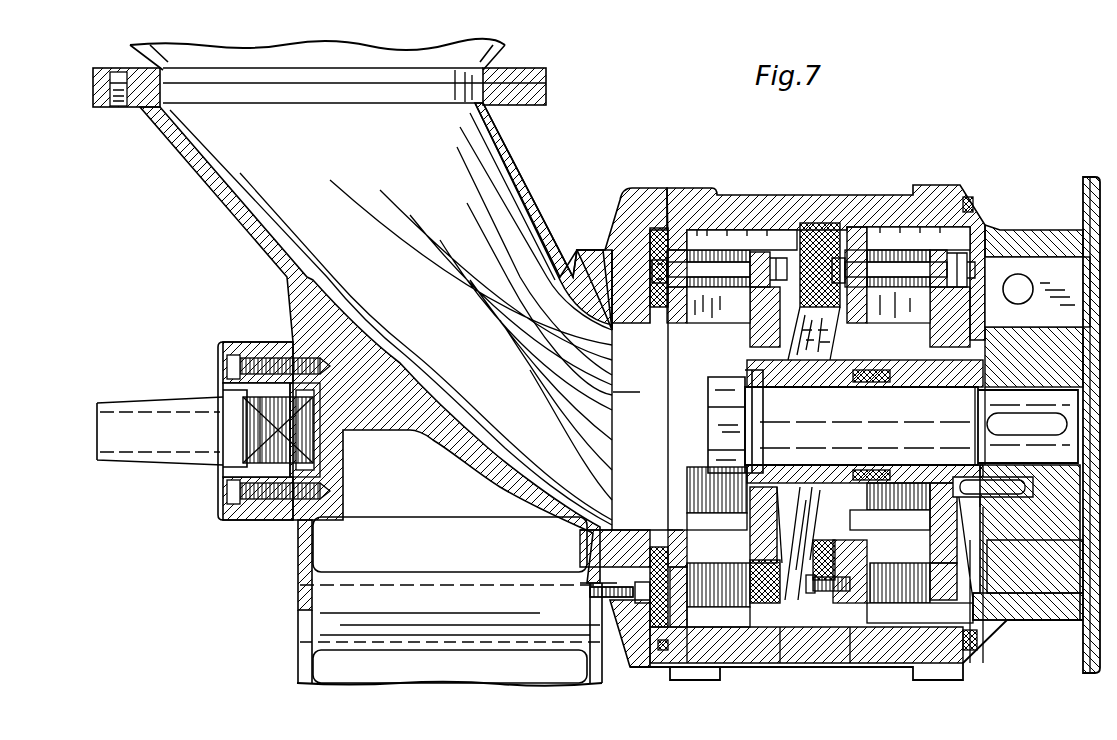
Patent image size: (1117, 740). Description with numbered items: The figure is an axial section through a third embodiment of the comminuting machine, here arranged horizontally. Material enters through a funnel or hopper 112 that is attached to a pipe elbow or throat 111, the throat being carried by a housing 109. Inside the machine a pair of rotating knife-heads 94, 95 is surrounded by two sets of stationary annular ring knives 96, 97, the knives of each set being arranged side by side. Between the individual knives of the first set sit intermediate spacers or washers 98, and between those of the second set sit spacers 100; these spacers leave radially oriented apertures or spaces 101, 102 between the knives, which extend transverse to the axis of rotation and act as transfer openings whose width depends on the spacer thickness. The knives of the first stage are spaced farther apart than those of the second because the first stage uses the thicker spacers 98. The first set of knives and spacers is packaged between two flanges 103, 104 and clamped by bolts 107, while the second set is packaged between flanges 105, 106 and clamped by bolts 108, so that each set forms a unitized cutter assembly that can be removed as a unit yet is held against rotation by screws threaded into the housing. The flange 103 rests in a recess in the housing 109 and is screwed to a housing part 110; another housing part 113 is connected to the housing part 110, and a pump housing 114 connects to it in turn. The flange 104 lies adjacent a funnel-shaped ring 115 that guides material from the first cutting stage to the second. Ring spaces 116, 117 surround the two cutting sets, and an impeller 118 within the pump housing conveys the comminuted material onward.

The rotating knife-head 94 is at (735, 253).
The rotating knife-head 95 is at (892, 280).
The stationary annular ring knives 96 is at (705, 250).
The stationary annular ring knives 97 is at (918, 250).
The spacers 98 is at (741, 250).
The spacers 100 is at (875, 250).
The radially oriented apertures 101 is at (742, 600).
The radially oriented apertures 102 is at (902, 600).
The flange 103 is at (648, 250).
The flange 104 is at (762, 598).
The flange 105 is at (840, 250).
The flange 106 is at (968, 254).
The bolts 107 is at (718, 298).
The bolts 108 is at (983, 268).
The housing 109 is at (628, 225).
The housing part 110 is at (688, 187).
The pipe elbow or throat 111 is at (254, 237).
The funnel or hopper 112 is at (505, 49).
The housing part 113 is at (954, 193).
The pump housing 114 is at (1063, 610).
The funnel-shaped ring 115 is at (842, 625).
The ring space 116 is at (667, 658).
The ring space 117 is at (974, 640).
The impeller 118 is at (1058, 278).